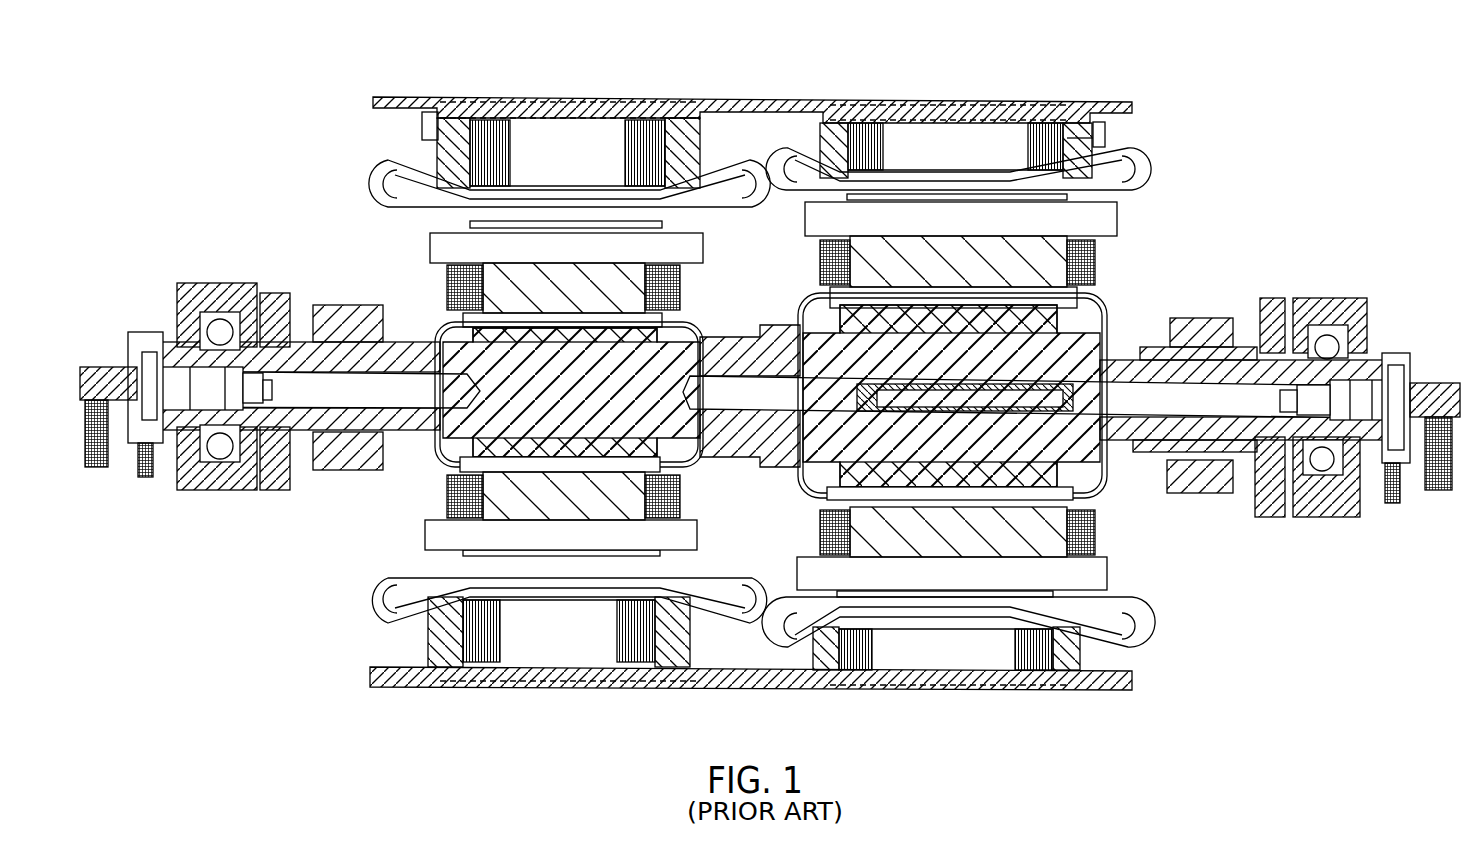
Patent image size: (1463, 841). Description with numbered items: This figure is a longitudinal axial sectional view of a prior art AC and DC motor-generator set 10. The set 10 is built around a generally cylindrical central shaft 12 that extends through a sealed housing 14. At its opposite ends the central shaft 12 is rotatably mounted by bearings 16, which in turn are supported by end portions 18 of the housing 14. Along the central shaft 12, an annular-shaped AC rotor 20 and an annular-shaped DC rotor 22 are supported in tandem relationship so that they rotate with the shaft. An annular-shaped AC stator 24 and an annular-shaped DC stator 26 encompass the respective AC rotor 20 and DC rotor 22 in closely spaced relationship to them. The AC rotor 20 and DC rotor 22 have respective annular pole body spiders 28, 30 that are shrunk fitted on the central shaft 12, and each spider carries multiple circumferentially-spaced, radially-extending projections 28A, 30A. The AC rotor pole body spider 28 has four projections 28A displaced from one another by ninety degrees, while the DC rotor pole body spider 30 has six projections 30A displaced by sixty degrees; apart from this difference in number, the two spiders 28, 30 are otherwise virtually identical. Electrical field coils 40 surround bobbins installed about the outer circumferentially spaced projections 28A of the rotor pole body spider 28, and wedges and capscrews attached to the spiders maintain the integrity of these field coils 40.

The motor-generator set 10 is at (770, 391).
The central shaft 12 is at (722, 438).
The sealed housing 14 is at (410, 94).
The bearings 16 is at (218, 456).
The end portions 18 is at (233, 296).
The AC rotor 20 is at (540, 220).
The DC rotor 22 is at (911, 192).
The AC stator 24 is at (534, 645).
The DC stator 26 is at (923, 653).
The AC rotor pole body spider 28 is at (588, 505).
The projections 28A is at (590, 280).
The DC rotor pole body spider 30 is at (987, 540).
The projections 30A is at (1003, 245).
The electrical field coils 40 is at (445, 500).